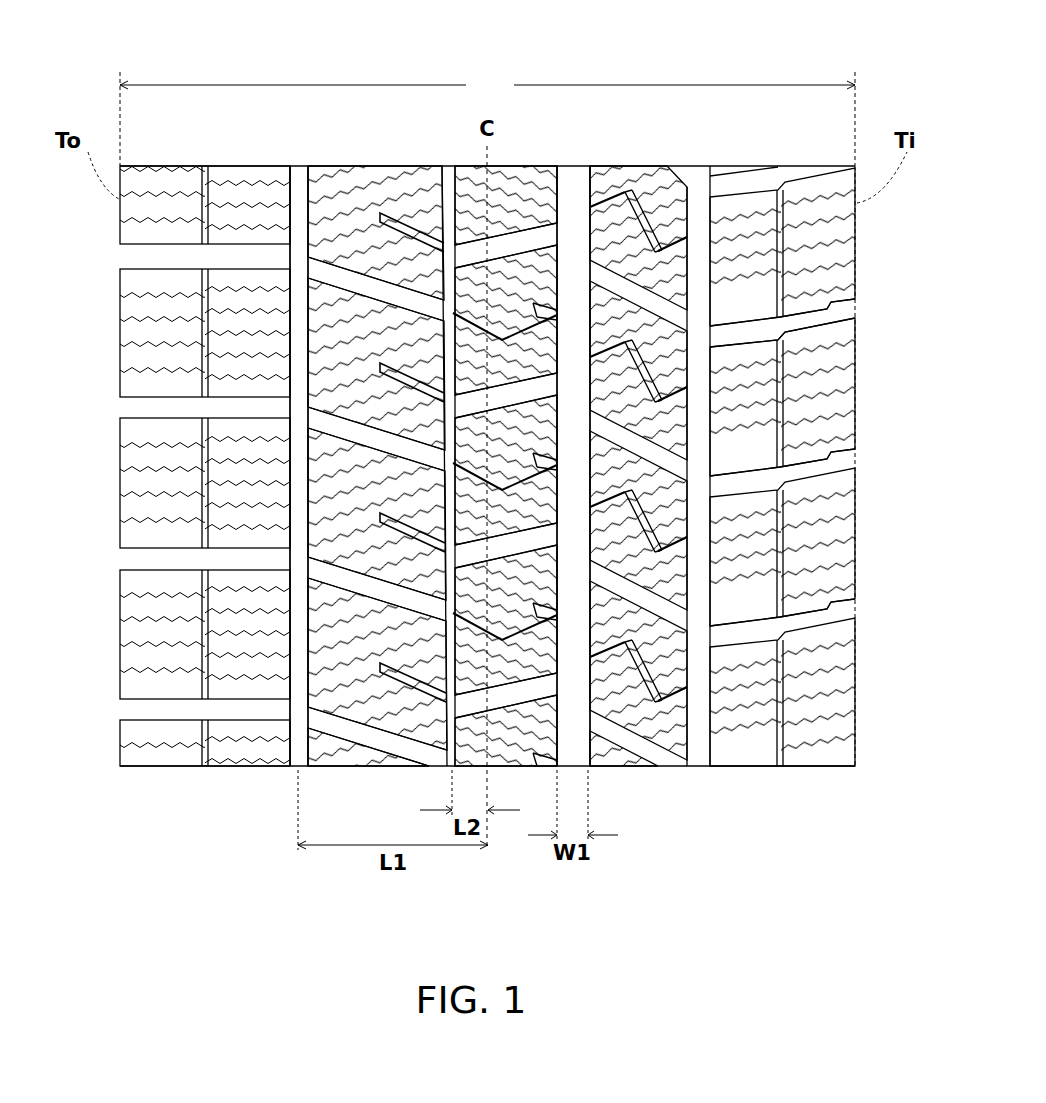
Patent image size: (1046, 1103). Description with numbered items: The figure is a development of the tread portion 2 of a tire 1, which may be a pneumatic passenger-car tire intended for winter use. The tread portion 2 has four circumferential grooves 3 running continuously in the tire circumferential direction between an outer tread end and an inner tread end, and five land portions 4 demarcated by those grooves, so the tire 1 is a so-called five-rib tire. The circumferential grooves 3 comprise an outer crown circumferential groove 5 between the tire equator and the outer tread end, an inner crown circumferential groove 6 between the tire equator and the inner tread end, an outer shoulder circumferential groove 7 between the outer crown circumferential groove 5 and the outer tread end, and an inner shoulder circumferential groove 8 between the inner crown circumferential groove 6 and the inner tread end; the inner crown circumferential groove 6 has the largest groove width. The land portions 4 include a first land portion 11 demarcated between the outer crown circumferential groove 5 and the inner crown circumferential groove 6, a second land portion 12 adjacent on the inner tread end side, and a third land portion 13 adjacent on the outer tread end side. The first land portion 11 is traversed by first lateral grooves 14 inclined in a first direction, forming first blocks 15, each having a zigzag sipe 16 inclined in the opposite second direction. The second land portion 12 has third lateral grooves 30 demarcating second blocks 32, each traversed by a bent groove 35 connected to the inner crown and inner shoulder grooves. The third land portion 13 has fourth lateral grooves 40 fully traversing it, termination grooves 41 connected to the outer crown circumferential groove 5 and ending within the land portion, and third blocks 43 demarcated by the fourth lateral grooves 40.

The tire 1 is at (610, 156).
The tread portion 2 is at (405, 158).
The circumferential grooves 3 is at (582, 365).
The land portions 4 is at (165, 193).
The outer crown circumferential groove 5 is at (450, 197).
The inner crown circumferential groove 6 is at (572, 192).
The outer shoulder circumferential groove 7 is at (298, 192).
The inner shoulder circumferential groove 8 is at (699, 202).
The first land portion 11 is at (514, 202).
The second land portion 12 is at (643, 197).
The third land portion 13 is at (362, 197).
The first lateral grooves 14 is at (515, 541).
The first blocks 15 is at (522, 631).
The sipe 16 is at (400, 535).
The third lateral grooves 30 is at (858, 246).
The second blocks 32 is at (700, 455).
The bent groove 35 is at (835, 317).
The fourth lateral grooves 40 is at (330, 322).
The termination grooves 41 is at (400, 677).
The third blocks 43 is at (383, 512).